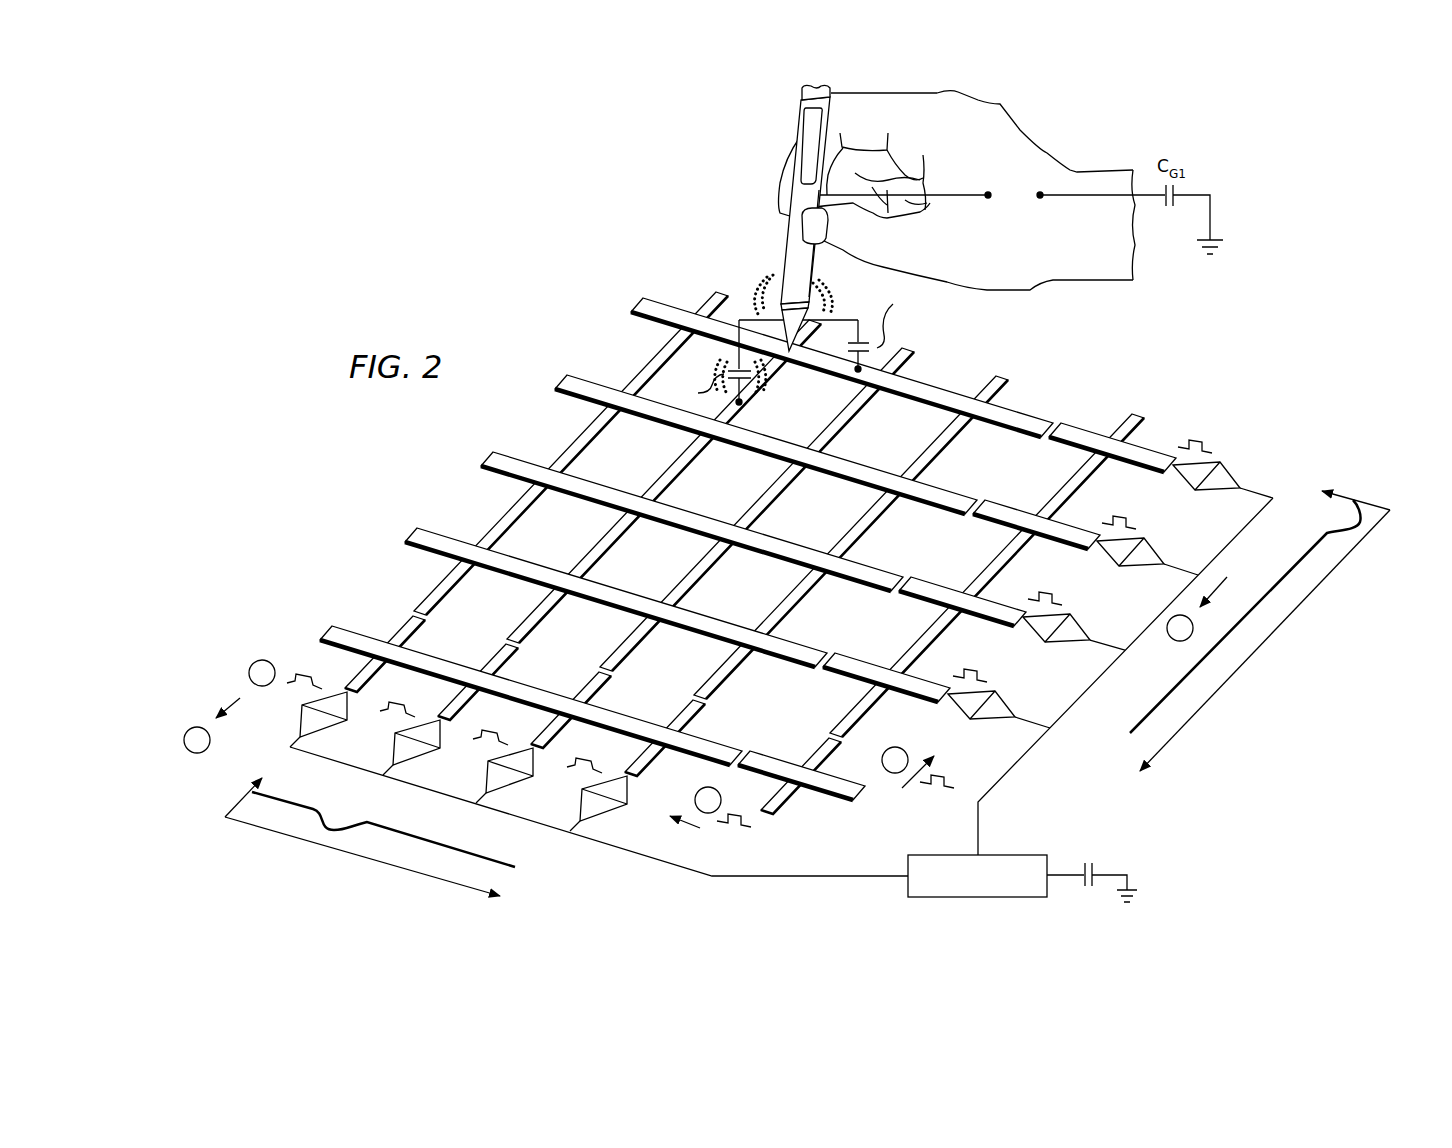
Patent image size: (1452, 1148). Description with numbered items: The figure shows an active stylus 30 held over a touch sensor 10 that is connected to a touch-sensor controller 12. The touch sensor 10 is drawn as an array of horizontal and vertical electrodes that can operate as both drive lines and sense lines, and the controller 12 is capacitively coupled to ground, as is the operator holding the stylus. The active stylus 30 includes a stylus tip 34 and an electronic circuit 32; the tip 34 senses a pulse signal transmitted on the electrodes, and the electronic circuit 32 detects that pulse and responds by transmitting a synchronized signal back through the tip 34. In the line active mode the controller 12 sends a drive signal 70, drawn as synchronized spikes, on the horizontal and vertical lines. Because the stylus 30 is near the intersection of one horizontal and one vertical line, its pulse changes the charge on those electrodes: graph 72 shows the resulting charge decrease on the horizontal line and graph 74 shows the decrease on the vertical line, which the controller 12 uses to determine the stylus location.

The touch sensor 10 is at (646, 229).
The touch-sensor controller 12 is at (1008, 855).
The active stylus 30 is at (795, 237).
The electronic circuit 32 is at (808, 168).
The stylus tip 34 is at (797, 337).
The drive signal 70 is at (959, 770).
The graph 72 is at (1372, 464).
The graph 74 is at (540, 868).